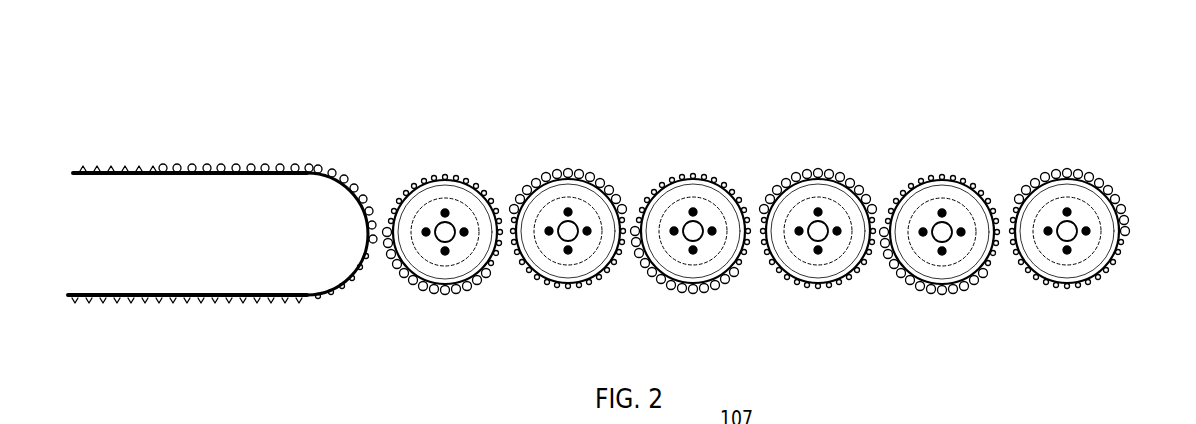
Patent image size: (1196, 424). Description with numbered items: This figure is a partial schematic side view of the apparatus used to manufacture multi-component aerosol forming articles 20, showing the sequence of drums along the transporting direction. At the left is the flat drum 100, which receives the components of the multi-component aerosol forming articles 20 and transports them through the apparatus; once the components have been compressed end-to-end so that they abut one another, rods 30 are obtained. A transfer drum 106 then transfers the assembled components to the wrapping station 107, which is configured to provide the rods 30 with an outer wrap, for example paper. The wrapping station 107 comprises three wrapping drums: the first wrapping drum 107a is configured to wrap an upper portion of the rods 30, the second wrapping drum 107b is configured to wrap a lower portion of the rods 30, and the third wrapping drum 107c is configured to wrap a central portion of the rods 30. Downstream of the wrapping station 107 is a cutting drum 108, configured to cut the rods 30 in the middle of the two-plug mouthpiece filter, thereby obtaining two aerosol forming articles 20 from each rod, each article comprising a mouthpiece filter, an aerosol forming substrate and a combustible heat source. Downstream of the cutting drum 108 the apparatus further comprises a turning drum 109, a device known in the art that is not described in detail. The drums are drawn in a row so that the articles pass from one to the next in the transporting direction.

The flat drum 100 is at (222, 182).
The transfer drum 106 is at (436, 232).
The wrapping station 107 is at (493, 70).
The first wrapping drum 107a is at (561, 182).
The second wrapping drum 107b is at (684, 187).
The third wrapping drum 107c is at (807, 181).
The cutting drum 108 is at (931, 186).
The turning drum 109 is at (1074, 183).
The multi-component aerosol forming article 20 is at (1107, 185).
The rod 30 is at (477, 291).